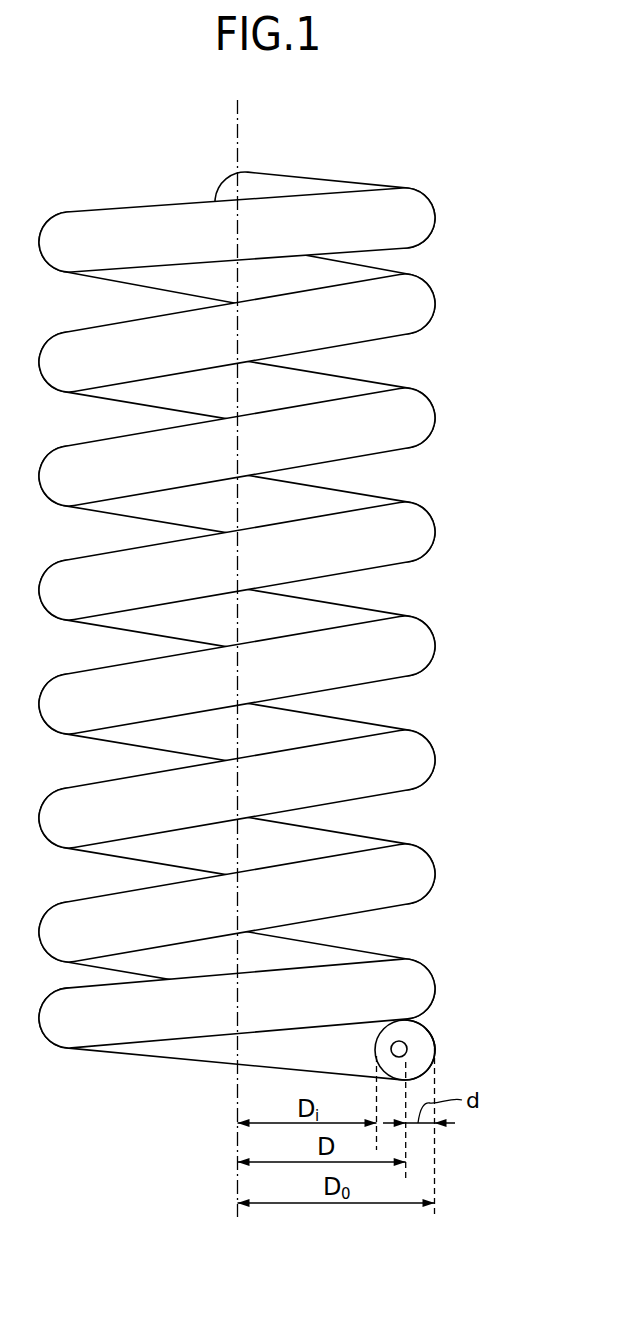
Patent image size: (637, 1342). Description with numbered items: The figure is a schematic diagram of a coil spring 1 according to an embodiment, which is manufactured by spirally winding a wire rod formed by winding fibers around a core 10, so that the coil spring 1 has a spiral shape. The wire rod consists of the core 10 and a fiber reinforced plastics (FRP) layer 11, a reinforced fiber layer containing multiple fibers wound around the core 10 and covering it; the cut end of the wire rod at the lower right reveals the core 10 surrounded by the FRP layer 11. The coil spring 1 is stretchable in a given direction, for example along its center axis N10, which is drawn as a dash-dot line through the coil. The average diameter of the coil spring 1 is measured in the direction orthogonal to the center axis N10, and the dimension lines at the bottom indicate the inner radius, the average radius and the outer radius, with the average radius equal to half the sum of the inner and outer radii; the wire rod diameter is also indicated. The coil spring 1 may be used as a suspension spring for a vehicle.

The coil spring 1 is at (343, 154).
The core 10 is at (407, 1049).
The fiber reinforced plastics (FRP) layer 11 is at (439, 1025).
The center axis N10 is at (236, 135).